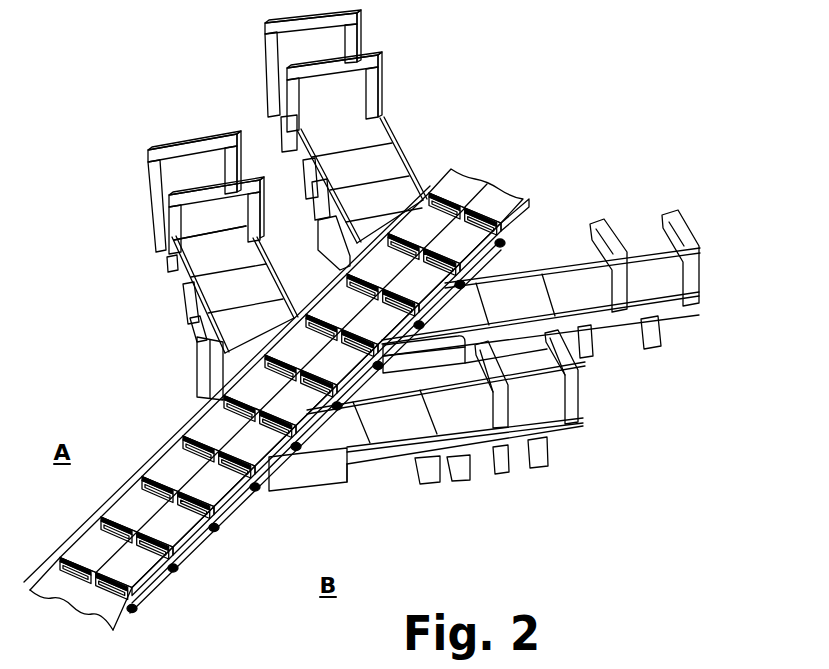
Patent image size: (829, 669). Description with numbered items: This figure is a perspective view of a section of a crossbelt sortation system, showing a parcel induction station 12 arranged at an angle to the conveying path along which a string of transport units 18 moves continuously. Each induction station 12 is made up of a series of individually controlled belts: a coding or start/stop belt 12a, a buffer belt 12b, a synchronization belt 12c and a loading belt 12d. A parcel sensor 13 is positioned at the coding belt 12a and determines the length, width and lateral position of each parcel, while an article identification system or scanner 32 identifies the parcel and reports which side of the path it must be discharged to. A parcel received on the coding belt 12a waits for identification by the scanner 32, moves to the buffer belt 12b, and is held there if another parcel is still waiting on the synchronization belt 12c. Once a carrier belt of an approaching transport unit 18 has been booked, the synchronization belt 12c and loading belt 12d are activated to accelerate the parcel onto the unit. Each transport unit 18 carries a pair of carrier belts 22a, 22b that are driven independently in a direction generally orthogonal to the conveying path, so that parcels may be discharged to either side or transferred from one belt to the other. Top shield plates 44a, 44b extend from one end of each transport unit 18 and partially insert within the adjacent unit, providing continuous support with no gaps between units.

The parcel induction station 12 is at (273, 111).
The coding belt 12a is at (280, 72).
The buffer belt 12b is at (363, 133).
The synchronization belt 12c is at (377, 170).
The loading belt 12d is at (383, 203).
The parcel sensor 13 is at (374, 62).
The transport unit 18 is at (505, 190).
The carrier belt 22a is at (137, 506).
The carrier belt 22b is at (208, 532).
The article identification system 32 is at (287, 24).
The support plate 44a is at (197, 432).
The guide rail 44b is at (265, 458).